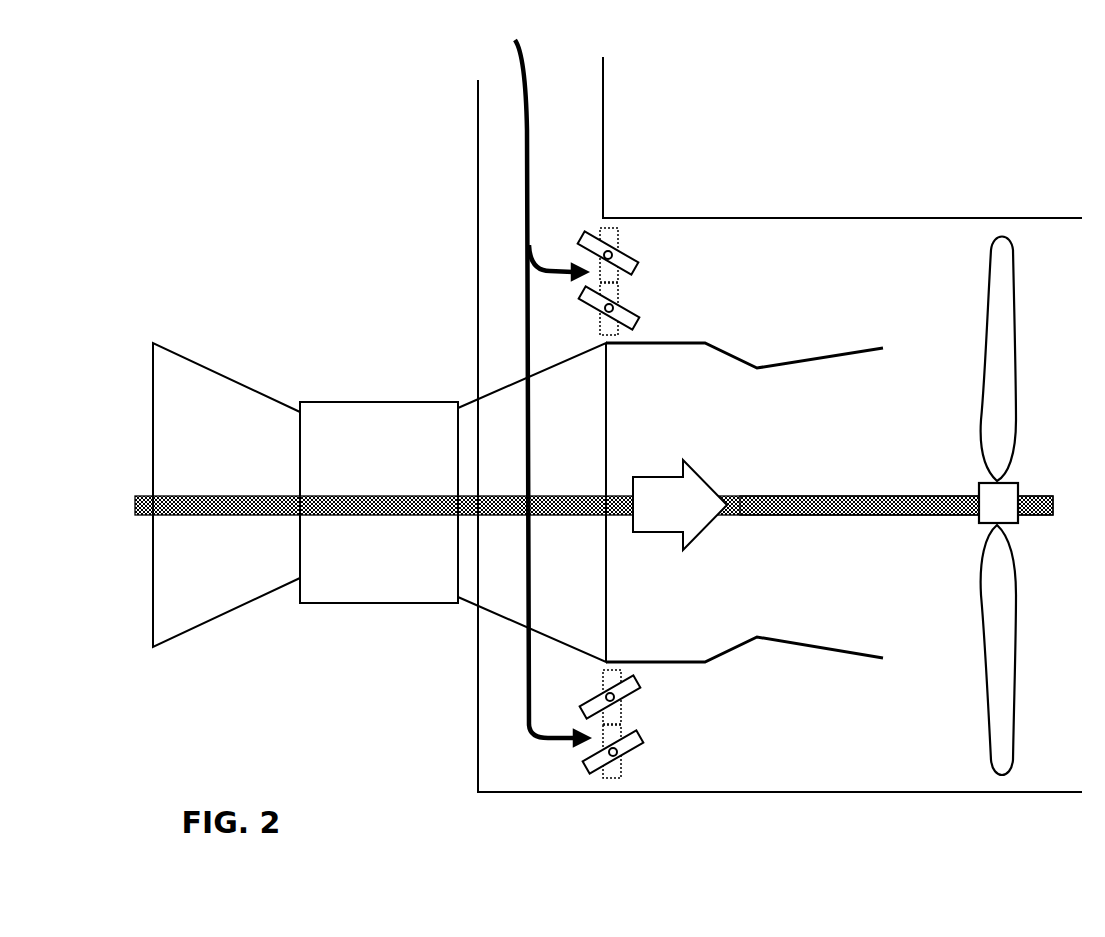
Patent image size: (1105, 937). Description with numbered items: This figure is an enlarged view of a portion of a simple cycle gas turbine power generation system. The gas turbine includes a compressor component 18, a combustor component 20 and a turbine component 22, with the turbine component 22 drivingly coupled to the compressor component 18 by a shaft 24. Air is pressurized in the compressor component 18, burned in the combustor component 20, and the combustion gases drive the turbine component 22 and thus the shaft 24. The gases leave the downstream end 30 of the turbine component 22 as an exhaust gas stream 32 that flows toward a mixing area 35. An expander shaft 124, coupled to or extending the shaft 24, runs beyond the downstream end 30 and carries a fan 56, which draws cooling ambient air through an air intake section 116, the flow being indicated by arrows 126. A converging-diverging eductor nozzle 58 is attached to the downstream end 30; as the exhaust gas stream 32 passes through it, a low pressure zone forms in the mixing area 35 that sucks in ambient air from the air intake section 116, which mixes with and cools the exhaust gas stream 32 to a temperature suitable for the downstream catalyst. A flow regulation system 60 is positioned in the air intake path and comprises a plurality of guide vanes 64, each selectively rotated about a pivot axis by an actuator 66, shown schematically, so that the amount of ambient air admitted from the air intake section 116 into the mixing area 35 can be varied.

The compressor component 18 is at (221, 460).
The combustor component 20 is at (369, 460).
The turbine component 22 is at (502, 460).
The shaft 24 is at (147, 513).
The downstream end 30 is at (608, 402).
The exhaust gas stream 32 is at (654, 516).
The mixing area 35 is at (916, 301).
The fan 56 is at (989, 652).
The eductor nozzle 58 is at (774, 344).
The flow regulation system 60 is at (648, 500).
The guide vane 64 is at (637, 317).
The actuator 66 is at (615, 305).
The air intake section 116 is at (620, 89).
The expander shaft 124 is at (880, 513).
The arrows 126 is at (527, 68).